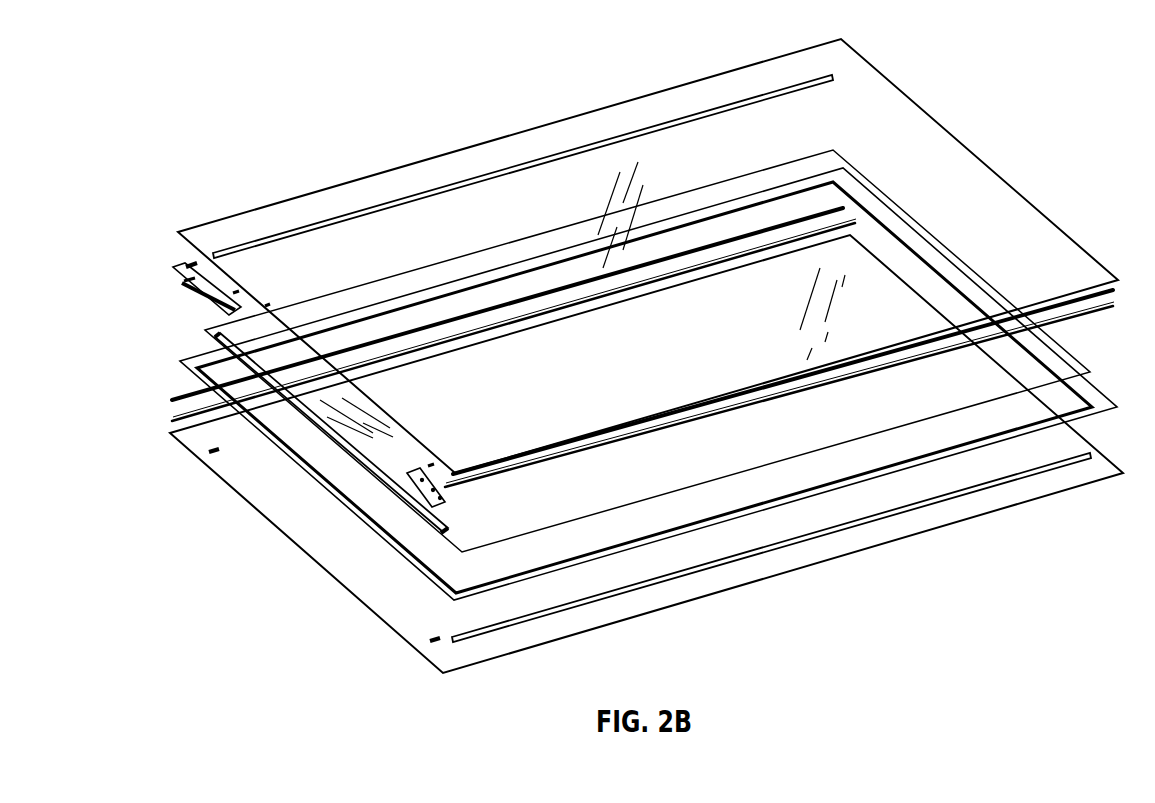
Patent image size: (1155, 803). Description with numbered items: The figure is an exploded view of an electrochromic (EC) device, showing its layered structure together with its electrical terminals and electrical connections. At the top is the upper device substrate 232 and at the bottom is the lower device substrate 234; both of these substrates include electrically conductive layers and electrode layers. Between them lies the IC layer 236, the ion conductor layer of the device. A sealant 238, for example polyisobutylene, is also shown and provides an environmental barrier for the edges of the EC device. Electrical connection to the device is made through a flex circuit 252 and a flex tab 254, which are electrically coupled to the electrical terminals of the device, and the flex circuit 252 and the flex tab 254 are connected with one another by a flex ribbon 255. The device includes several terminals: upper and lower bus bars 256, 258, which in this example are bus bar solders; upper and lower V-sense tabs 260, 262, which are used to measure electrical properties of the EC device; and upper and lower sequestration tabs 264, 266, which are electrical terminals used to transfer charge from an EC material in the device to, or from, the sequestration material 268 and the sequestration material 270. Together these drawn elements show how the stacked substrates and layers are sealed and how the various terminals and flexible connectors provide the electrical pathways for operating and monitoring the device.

The upper device substrate 232 is at (492, 139).
The lower device substrate 234 is at (990, 512).
The IC layer 236 is at (1076, 360).
The sealant 238 is at (303, 477).
The flex circuit 252 is at (172, 268).
The flex tab 254 is at (417, 497).
The flex ribbon 255 is at (207, 332).
The upper bus bar 256 is at (697, 432).
The lower bus bar 258 is at (172, 420).
The upper V-sense tab 260 is at (190, 298).
The lower V-sense tab 262 is at (210, 451).
The upper sequestration tab 264 is at (187, 264).
The lower sequestration tab 266 is at (431, 640).
The sequestration material 268 is at (695, 113).
The sequestration material 270 is at (605, 598).